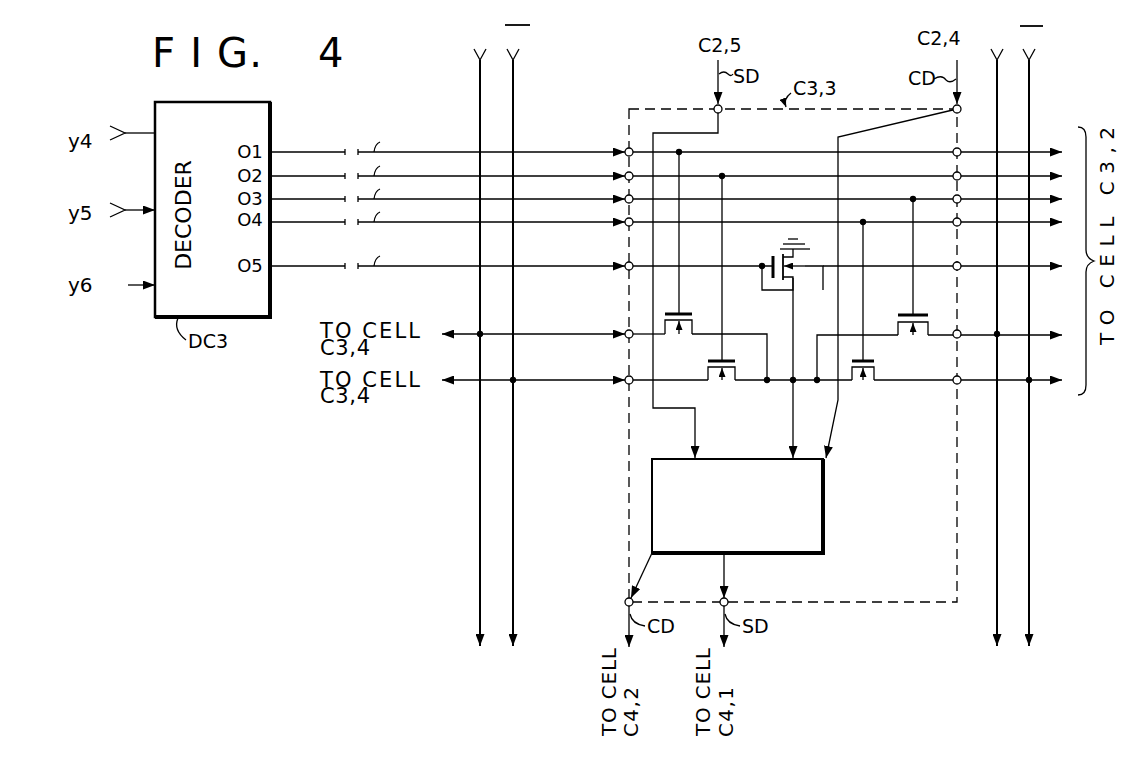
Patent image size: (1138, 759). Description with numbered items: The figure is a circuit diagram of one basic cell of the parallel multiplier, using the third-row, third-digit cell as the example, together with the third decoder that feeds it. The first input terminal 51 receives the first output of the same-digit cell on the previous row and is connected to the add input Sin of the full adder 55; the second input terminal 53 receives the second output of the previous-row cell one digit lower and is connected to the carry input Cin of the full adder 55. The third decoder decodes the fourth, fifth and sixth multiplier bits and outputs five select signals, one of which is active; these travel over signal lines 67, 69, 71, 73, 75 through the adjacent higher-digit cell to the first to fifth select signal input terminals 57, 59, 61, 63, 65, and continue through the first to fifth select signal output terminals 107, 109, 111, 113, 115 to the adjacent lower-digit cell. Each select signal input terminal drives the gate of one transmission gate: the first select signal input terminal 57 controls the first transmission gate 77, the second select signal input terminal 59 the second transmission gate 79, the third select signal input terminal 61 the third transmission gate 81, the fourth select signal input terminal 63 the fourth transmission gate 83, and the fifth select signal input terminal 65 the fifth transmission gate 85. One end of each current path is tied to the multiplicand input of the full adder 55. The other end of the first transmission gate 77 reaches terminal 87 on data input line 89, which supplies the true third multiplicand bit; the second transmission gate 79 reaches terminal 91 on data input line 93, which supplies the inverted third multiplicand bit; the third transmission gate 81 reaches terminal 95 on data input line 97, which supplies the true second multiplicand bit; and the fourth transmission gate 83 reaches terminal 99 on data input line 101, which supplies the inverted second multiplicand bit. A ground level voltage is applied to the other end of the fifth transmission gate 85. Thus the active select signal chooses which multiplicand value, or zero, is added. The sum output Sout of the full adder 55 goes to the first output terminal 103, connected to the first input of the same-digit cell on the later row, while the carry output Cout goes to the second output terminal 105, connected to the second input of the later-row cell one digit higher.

The first input terminal 51 is at (720, 114).
The second input terminal 53 is at (955, 114).
The full adder 55 is at (824, 535).
The first select signal input terminal 57 is at (623, 151).
The second select signal input terminal 59 is at (623, 175).
The third select signal input terminal 61 is at (623, 198).
The fourth select signal input terminal 63 is at (623, 221).
The fifth select signal input terminal 65 is at (623, 264).
The signal line 67 is at (519, 152).
The signal line 69 is at (519, 176).
The signal line 71 is at (519, 199).
The signal line 73 is at (519, 222).
The signal line 75 is at (519, 266).
The first transmission gate 77 is at (698, 322).
The second transmission gate 79 is at (705, 372).
The third transmission gate 81 is at (902, 314).
The fourth transmission gate 83 is at (869, 386).
The fifth transmission gate 85 is at (802, 272).
The terminal 87 is at (627, 329).
The data input line 89 is at (479, 84).
The terminal 91 is at (627, 377).
The data input line 93 is at (514, 84).
The terminal 95 is at (958, 331).
The data input line 97 is at (996, 82).
The terminal 99 is at (958, 377).
The data input line 101 is at (1031, 82).
The first output terminal 103 is at (728, 596).
The second output terminal 105 is at (636, 598).
The first select signal output terminal 107 is at (958, 150).
The second select signal output terminal 109 is at (956, 174).
The third select signal output terminal 111 is at (958, 199).
The fourth select signal output terminal 113 is at (958, 223).
The fifth select signal output terminal 115 is at (956, 265).